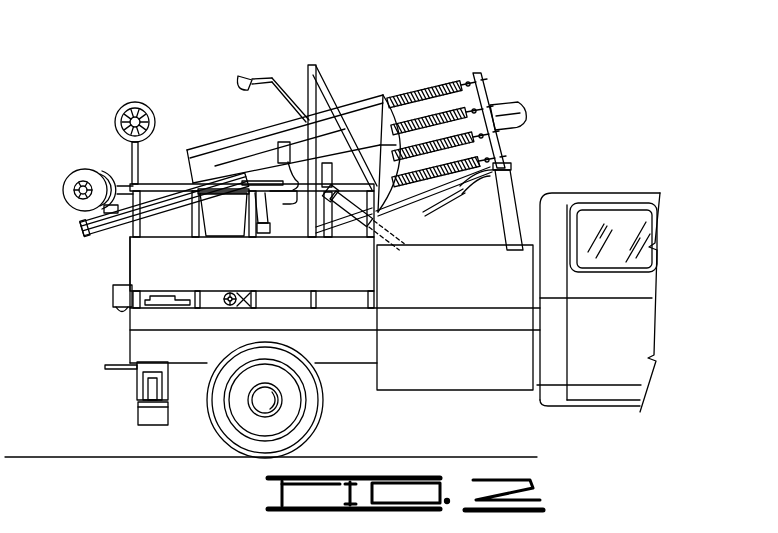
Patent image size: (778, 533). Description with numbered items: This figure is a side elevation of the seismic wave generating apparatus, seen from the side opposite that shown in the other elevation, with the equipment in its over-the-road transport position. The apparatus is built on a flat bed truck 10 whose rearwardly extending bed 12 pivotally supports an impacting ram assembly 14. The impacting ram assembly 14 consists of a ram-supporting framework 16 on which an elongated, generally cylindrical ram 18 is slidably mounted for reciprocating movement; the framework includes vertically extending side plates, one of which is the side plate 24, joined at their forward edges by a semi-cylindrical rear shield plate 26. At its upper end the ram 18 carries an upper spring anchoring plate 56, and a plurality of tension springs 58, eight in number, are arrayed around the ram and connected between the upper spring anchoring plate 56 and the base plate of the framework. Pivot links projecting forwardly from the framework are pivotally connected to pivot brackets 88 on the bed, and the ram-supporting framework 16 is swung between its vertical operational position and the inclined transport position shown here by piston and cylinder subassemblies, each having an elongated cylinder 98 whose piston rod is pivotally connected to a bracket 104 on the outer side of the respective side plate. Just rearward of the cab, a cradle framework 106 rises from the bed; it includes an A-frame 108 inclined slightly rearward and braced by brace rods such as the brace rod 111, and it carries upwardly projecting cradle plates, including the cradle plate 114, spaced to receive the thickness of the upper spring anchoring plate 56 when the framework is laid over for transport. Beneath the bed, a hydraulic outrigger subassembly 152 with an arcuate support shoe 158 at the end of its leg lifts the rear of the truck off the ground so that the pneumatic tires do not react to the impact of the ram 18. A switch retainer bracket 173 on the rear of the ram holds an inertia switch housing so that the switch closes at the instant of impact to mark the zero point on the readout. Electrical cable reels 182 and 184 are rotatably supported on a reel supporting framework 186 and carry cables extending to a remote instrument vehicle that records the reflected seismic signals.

The flat bed truck 10 is at (626, 187).
The bed 12 is at (348, 370).
The impacting ram assembly 14 is at (364, 88).
The ram-supporting framework 16 is at (191, 134).
The ram 18 is at (80, 238).
The side plate 24 is at (385, 179).
The semi-cylindrical rear shield plate 26 is at (381, 137).
The upper spring anchoring plate 56 is at (477, 72).
The tension springs 58 is at (412, 90).
The pivot brackets 88 is at (234, 303).
The cylinder 98 is at (404, 235).
The bracket 104 is at (327, 172).
The cradle framework 106 is at (523, 177).
The A-frame 108 is at (510, 203).
The brace rod 111 is at (430, 212).
The cradle plate 114 is at (462, 196).
The hydraulic outrigger subassembly 152 is at (128, 421).
The arcuate support shoe 158 is at (163, 424).
The switch retainer bracket 173 is at (72, 212).
The electrical cable reel 182 is at (78, 174).
The electrical cable reel 184 is at (135, 100).
The reel supporting framework 186 is at (231, 175).